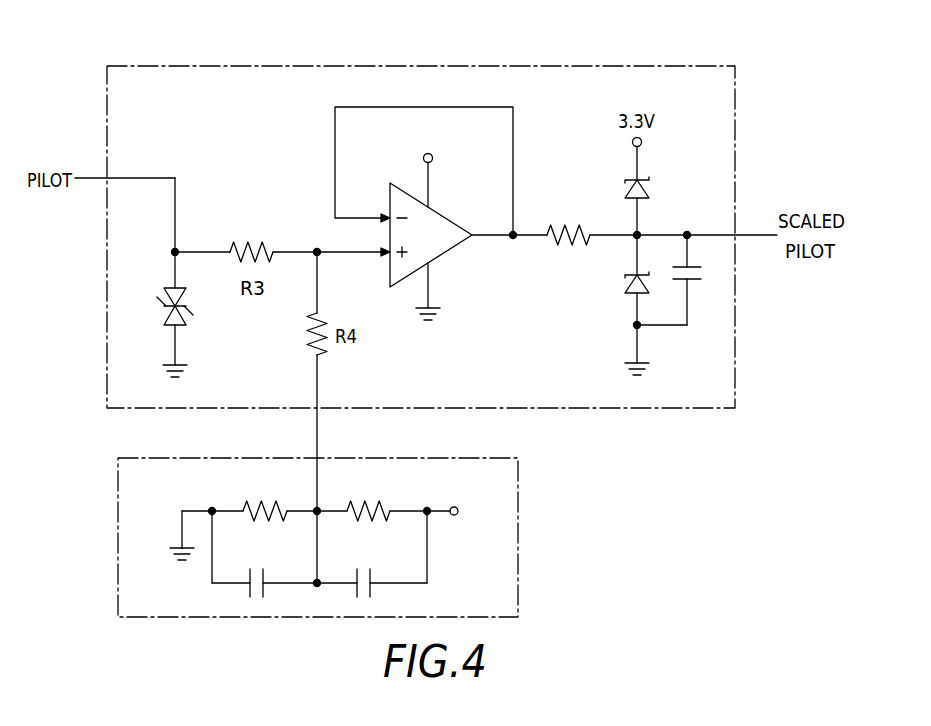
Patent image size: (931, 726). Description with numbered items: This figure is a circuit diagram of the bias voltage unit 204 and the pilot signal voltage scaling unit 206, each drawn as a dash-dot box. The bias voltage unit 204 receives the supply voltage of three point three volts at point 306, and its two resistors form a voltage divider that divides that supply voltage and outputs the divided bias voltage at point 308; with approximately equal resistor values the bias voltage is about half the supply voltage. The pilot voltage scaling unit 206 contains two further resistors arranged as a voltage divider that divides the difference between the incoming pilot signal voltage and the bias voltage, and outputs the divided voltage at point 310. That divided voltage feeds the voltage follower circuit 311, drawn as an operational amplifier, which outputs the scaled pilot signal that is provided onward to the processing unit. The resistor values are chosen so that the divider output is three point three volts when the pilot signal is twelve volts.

The bias voltage unit 204 is at (518, 540).
The pilot signal voltage scaling unit 206 is at (522, 66).
The point 306 is at (430, 514).
The point 308 is at (315, 514).
The point 310 is at (316, 246).
The voltage follower circuit 311 is at (452, 270).